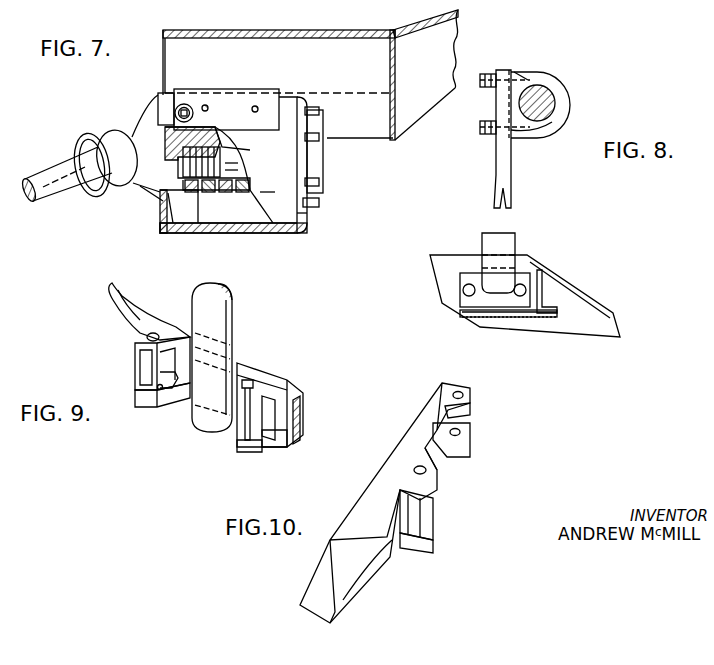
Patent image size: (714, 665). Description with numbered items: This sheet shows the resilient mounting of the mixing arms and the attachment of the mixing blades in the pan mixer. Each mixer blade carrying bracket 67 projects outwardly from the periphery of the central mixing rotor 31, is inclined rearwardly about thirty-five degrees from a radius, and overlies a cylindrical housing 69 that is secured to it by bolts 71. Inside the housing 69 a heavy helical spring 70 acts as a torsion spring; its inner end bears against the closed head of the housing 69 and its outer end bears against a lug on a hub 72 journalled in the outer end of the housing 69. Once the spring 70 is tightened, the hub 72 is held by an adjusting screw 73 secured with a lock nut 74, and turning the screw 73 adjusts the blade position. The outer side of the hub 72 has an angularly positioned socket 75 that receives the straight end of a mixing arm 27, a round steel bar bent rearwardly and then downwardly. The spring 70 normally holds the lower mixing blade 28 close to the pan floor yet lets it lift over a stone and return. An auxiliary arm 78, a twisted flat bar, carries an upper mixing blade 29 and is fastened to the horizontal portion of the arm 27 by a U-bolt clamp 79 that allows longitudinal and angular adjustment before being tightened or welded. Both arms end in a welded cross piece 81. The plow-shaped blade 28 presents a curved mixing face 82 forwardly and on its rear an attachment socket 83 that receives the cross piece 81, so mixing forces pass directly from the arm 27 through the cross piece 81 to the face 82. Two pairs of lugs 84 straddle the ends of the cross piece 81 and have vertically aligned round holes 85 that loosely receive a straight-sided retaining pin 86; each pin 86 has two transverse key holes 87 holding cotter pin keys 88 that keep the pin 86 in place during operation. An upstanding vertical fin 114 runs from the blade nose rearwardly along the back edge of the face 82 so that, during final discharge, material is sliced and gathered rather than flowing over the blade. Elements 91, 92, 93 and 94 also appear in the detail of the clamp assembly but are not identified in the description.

In FIG. 7, the mixing arm 27 is at (47, 176).
In FIG. 8, the mixing arm 27 is at (556, 101).
In FIG. 9, the mixing arm 27 is at (197, 312).
In FIG. 9, the lower mixing blade 28 is at (239, 438).
In FIG. 10, the lower mixing blade 28 is at (372, 494).
In FIG. 8, the upper mixing blade 29 is at (607, 322).
In FIG. 7, the central mixing rotor 31 is at (440, 45).
In FIG. 7, the mixer blade carrying bracket 67 is at (318, 33).
In FIG. 7, the cylindrical housing 69 is at (290, 232).
In FIG. 7, the helical spring 70 is at (247, 190).
In FIG. 7, the bolts 71 is at (256, 105).
In FIG. 7, the hub 72 is at (170, 95).
In FIG. 7, the adjusting screw 73 is at (197, 114).
In FIG. 7, the lock nut 74 is at (189, 106).
In FIG. 7, the socket 75 is at (104, 135).
In FIG. 8, the auxiliary arm 78 is at (497, 162).
In FIG. 8, the U-bolt clamp 79 is at (545, 138).
In FIG. 8, the cross piece 81 is at (467, 298).
In FIG. 9, the cross piece 81 is at (190, 393).
In FIG. 9, the curved mixing face 82 is at (292, 393).
In FIG. 10, the curved mixing face 82 is at (397, 455).
In FIG. 10, the attachment socket 83 is at (434, 454).
In FIG. 9, the lugs 84 is at (148, 405).
In FIG. 10, the lugs 84 is at (471, 408).
In FIG. 9, the round holes 85 is at (158, 336).
In FIG. 10, the round holes 85 is at (472, 428).
In FIG. 9, the retaining pin 86 is at (247, 449).
In FIG. 9, the key holes 87 is at (160, 379).
In FIG. 9, the cotter pin key 88 is at (272, 437).
In FIG. 8, the strip 91 is at (502, 326).
In FIG. 8, the serrated edge 92 is at (475, 313).
In FIG. 8, the angle member 93 is at (525, 284).
In FIG. 8, the pin 94 is at (475, 288).
In FIG. 9, the upstanding vertical fin 114 is at (122, 285).
In FIG. 10, the upstanding vertical fin 114 is at (333, 598).